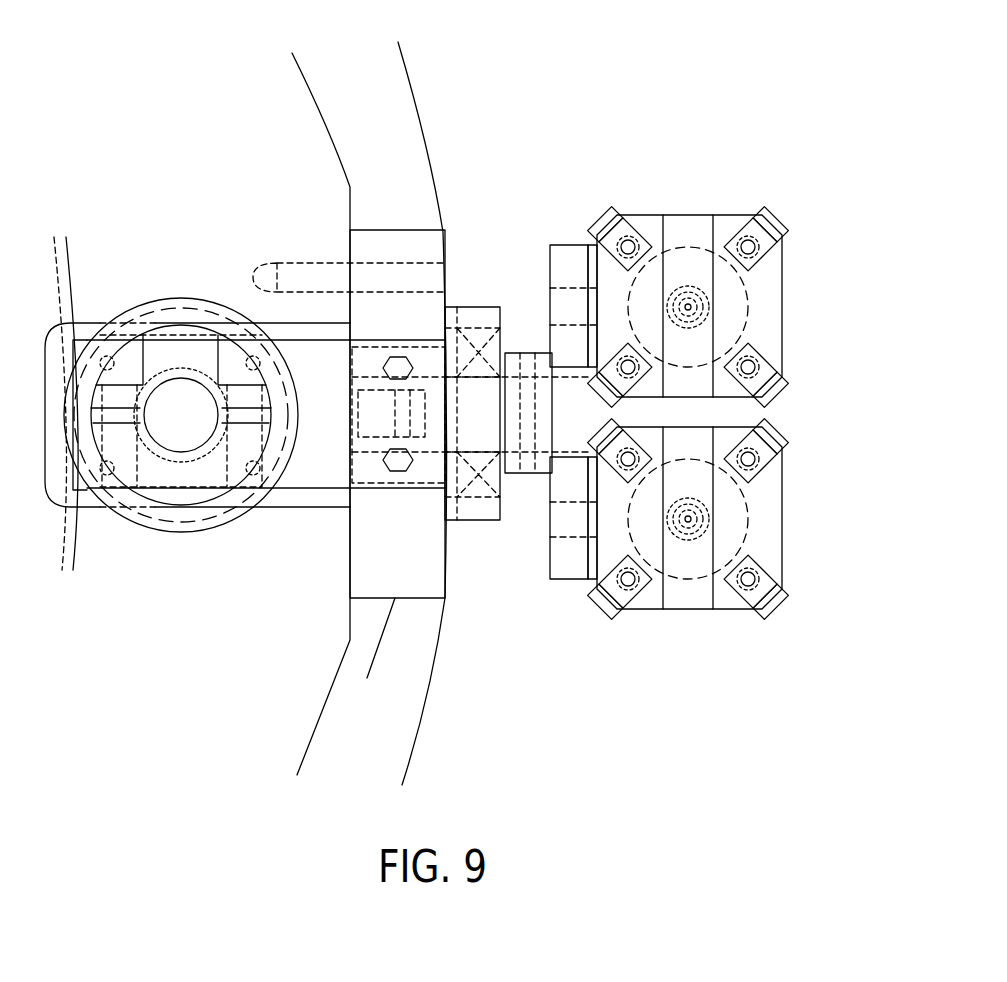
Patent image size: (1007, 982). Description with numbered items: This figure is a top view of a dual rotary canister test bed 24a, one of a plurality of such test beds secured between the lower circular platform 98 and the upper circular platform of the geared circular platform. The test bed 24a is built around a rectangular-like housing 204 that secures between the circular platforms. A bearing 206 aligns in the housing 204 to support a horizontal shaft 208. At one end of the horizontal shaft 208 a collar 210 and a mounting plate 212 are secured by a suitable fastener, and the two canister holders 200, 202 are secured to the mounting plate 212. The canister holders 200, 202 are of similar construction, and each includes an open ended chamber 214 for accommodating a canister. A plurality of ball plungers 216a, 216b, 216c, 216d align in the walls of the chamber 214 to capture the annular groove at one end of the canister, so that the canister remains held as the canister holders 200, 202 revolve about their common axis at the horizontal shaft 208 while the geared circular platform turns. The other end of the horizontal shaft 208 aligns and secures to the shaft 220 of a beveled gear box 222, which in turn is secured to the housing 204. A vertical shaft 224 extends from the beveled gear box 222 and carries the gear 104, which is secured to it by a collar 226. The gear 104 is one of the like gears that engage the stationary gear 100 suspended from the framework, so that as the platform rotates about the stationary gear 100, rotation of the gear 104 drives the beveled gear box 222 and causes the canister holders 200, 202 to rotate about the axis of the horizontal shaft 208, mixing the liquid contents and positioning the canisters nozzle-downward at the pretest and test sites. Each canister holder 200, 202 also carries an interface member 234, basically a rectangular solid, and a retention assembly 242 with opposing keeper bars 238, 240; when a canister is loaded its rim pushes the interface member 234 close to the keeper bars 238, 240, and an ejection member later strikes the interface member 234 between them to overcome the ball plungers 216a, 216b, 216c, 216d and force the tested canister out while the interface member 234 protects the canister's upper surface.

The dual rotary canister test bed 24a is at (680, 364).
The lower circular platform 98 is at (427, 697).
The stationary gear 100 is at (70, 255).
The gear 104 is at (145, 527).
The canister holder 200 is at (795, 302).
The canister holder 202 is at (797, 508).
The rectangular-like housing 204 is at (367, 679).
The bearing 206 is at (457, 325).
The horizontal shaft 208 is at (540, 473).
The collar 210 is at (547, 352).
The mounting plate 212 is at (563, 245).
The open ended chamber 214 is at (757, 507).
The ball plunger 216a is at (662, 553).
The ball plunger 216b is at (727, 533).
The ball plunger 216c is at (723, 498).
The ball plunger 216d is at (675, 473).
The shaft 220 is at (371, 484).
The beveled gear box 222 is at (172, 542).
The vertical shaft 224 is at (200, 427).
The collar 226 is at (230, 338).
The interface member 234 is at (620, 323).
The keeper bar 238 is at (605, 348).
The keeper bar 240 is at (600, 242).
The retention assembly 242 is at (582, 237).